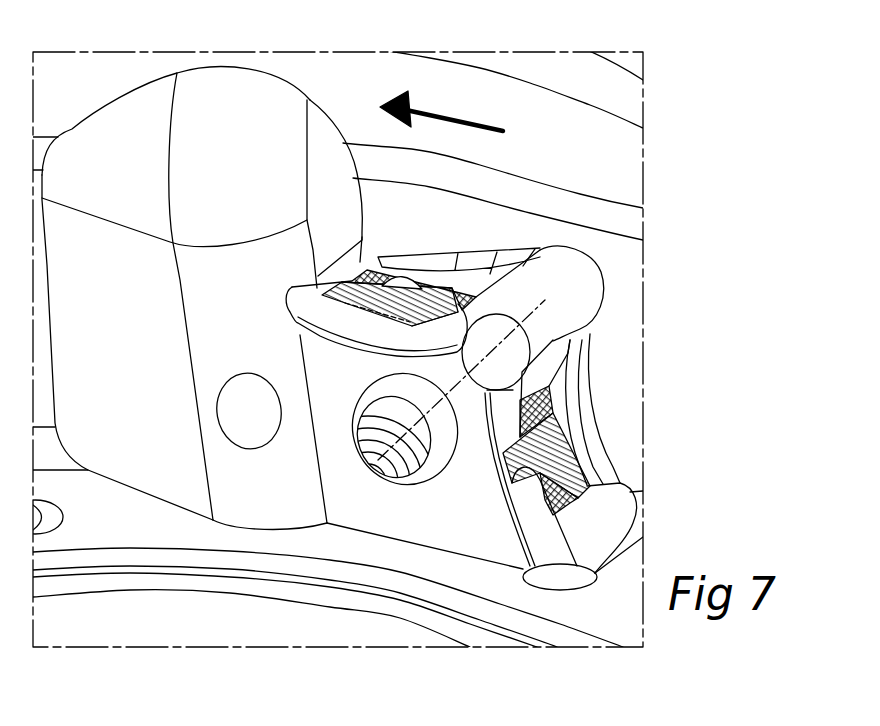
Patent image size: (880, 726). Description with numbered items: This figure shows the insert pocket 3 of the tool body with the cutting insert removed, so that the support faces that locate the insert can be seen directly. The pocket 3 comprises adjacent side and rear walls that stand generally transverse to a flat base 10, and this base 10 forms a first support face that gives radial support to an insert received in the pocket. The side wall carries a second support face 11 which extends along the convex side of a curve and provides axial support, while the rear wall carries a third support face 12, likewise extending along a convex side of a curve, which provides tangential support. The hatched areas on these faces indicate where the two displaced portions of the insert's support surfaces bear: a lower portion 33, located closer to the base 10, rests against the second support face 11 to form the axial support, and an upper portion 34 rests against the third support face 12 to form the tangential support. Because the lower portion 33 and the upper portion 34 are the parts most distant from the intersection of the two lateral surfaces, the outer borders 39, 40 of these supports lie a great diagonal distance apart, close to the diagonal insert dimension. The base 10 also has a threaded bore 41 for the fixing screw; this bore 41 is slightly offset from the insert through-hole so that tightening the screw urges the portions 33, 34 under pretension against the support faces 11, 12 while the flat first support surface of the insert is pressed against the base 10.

The insert pocket 3 is at (332, 474).
The base 10 is at (398, 513).
The second support face 11 is at (388, 283).
The third support face 12 is at (540, 403).
The lower portion of second support surface 33 is at (378, 305).
The upper portion of second support surface 34 is at (552, 448).
The outer border of axial support 39 is at (323, 289).
The outer border of tangential support 40 is at (585, 493).
The threaded bore 41 is at (418, 450).